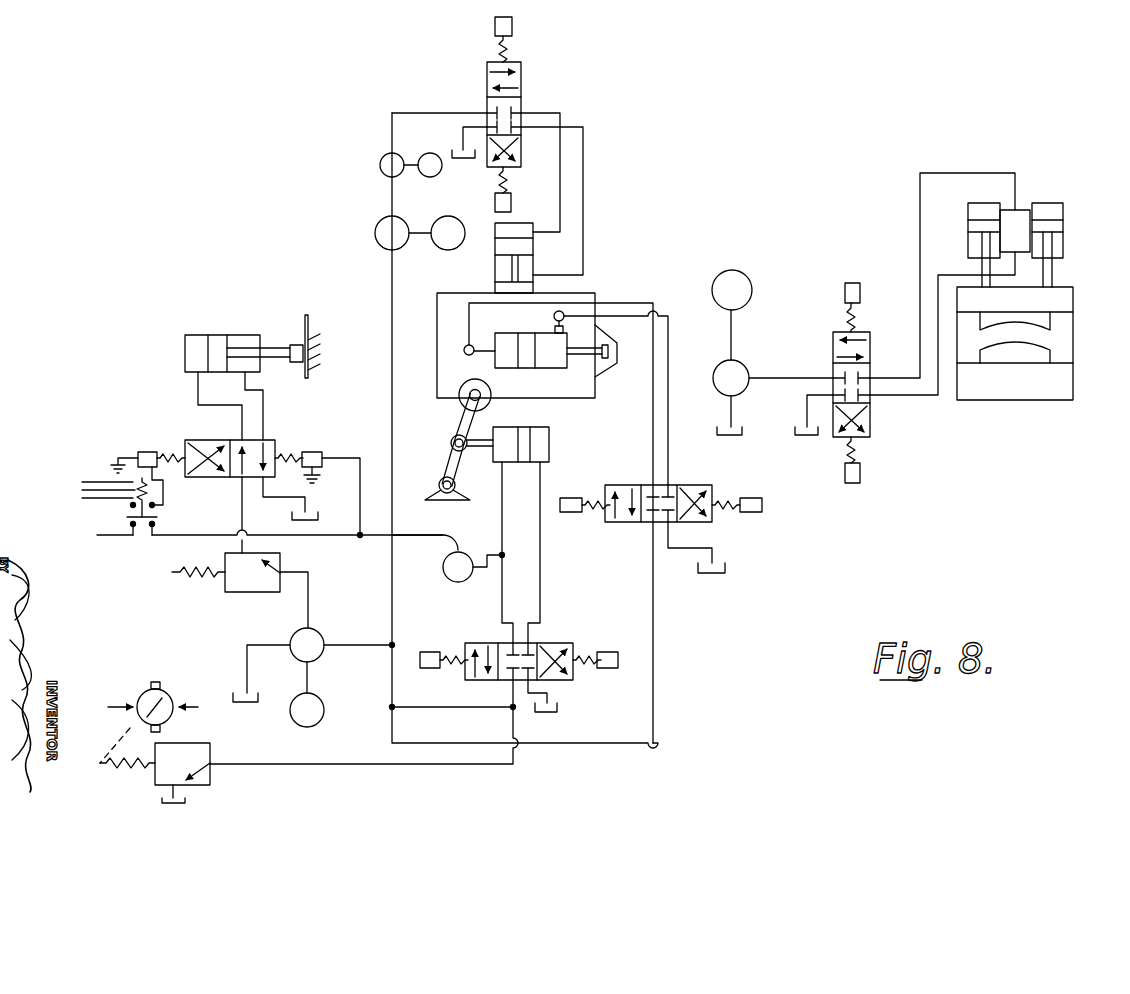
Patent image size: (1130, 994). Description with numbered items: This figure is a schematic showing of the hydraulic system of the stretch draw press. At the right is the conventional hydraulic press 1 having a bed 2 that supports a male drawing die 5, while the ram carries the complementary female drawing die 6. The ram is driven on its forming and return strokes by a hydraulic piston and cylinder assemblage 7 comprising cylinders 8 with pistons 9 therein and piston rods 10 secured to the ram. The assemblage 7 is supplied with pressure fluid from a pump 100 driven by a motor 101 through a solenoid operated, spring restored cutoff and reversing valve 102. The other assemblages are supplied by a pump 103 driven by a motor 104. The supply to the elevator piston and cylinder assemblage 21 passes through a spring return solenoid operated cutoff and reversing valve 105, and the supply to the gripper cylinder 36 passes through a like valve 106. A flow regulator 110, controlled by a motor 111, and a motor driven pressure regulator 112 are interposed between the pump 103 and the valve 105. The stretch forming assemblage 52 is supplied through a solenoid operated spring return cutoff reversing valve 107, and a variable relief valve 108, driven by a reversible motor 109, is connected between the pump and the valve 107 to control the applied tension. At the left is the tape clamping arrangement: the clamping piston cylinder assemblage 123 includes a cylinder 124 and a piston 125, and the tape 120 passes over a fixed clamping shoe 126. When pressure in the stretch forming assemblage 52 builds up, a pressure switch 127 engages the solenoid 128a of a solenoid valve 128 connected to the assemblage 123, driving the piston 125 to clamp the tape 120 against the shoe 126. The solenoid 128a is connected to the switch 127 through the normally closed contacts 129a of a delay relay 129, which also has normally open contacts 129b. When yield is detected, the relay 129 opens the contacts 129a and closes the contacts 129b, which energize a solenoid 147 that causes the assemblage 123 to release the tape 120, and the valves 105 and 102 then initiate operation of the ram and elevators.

The hydraulic press 1 is at (1073, 296).
The bed 2 is at (1073, 390).
The male drawing die 5 is at (1050, 350).
The female drawing die 6 is at (1050, 325).
The hydraulic piston and cylinder assemblage 7 is at (1007, 202).
The cylinder 8 is at (967, 210).
The piston 9 is at (967, 227).
The piston rod 10 is at (967, 243).
The elevator piston and cylinder assemblage 21 is at (533, 259).
The gripper cylinder 36 is at (557, 368).
The stretch forming assemblage 52 is at (550, 435).
The pump 100 is at (750, 364).
The motor 101 is at (752, 283).
The cutoff and reversing valve 102 is at (868, 421).
The pump 103 is at (320, 634).
The motor 104 is at (322, 702).
The cutoff and reversing valve 105 is at (522, 78).
The cutoff and reversing valve 106 is at (697, 483).
The cutoff reversing valve 107 is at (558, 642).
The variable relief valve 108 is at (208, 777).
The reversible motor 109 is at (162, 690).
The flow regulator 110 is at (381, 162).
The motor 111 is at (430, 152).
The pressure regulator 112 is at (378, 226).
The tape 120 is at (308, 323).
The clamping piston cylinder assemblage 123 is at (245, 330).
The cylinder 124 is at (210, 337).
The piston 125 is at (273, 358).
The clamping shoe 126 is at (315, 348).
The pressure switch 127 is at (443, 573).
The solenoid valve 128 is at (197, 438).
The solenoid 128a is at (308, 450).
The delay relay 129 is at (103, 474).
The normally closed contacts 129a is at (155, 523).
The normally open contacts 129b is at (130, 506).
The solenoid 147 is at (138, 452).